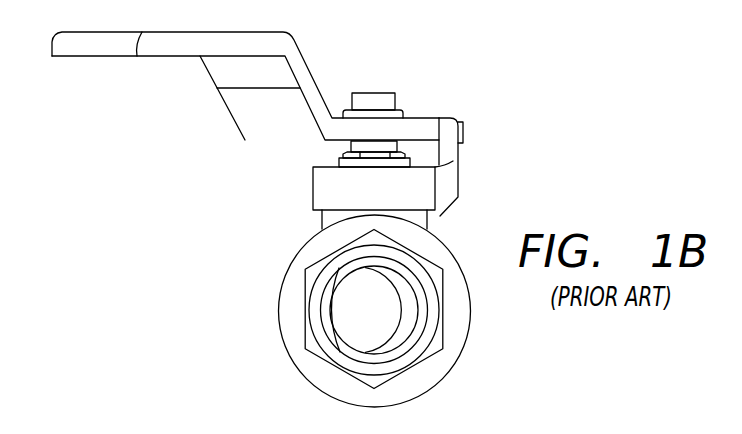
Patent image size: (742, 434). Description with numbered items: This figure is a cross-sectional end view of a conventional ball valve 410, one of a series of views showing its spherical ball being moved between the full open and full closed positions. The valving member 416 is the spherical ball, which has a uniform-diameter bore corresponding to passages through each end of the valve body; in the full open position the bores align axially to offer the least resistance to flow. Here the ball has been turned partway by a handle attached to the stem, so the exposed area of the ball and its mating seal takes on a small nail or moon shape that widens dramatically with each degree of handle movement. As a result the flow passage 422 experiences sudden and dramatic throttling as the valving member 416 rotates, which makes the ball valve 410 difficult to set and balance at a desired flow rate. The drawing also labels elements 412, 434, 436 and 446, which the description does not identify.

The ball valve 410 is at (465, 228).
The valve body end nut 412 is at (282, 343).
The valving member 416 is at (418, 325).
The flow passage 422 is at (338, 347).
The stem 434 is at (372, 92).
The handle 436 is at (92, 57).
The flow passage 446 is at (392, 281).